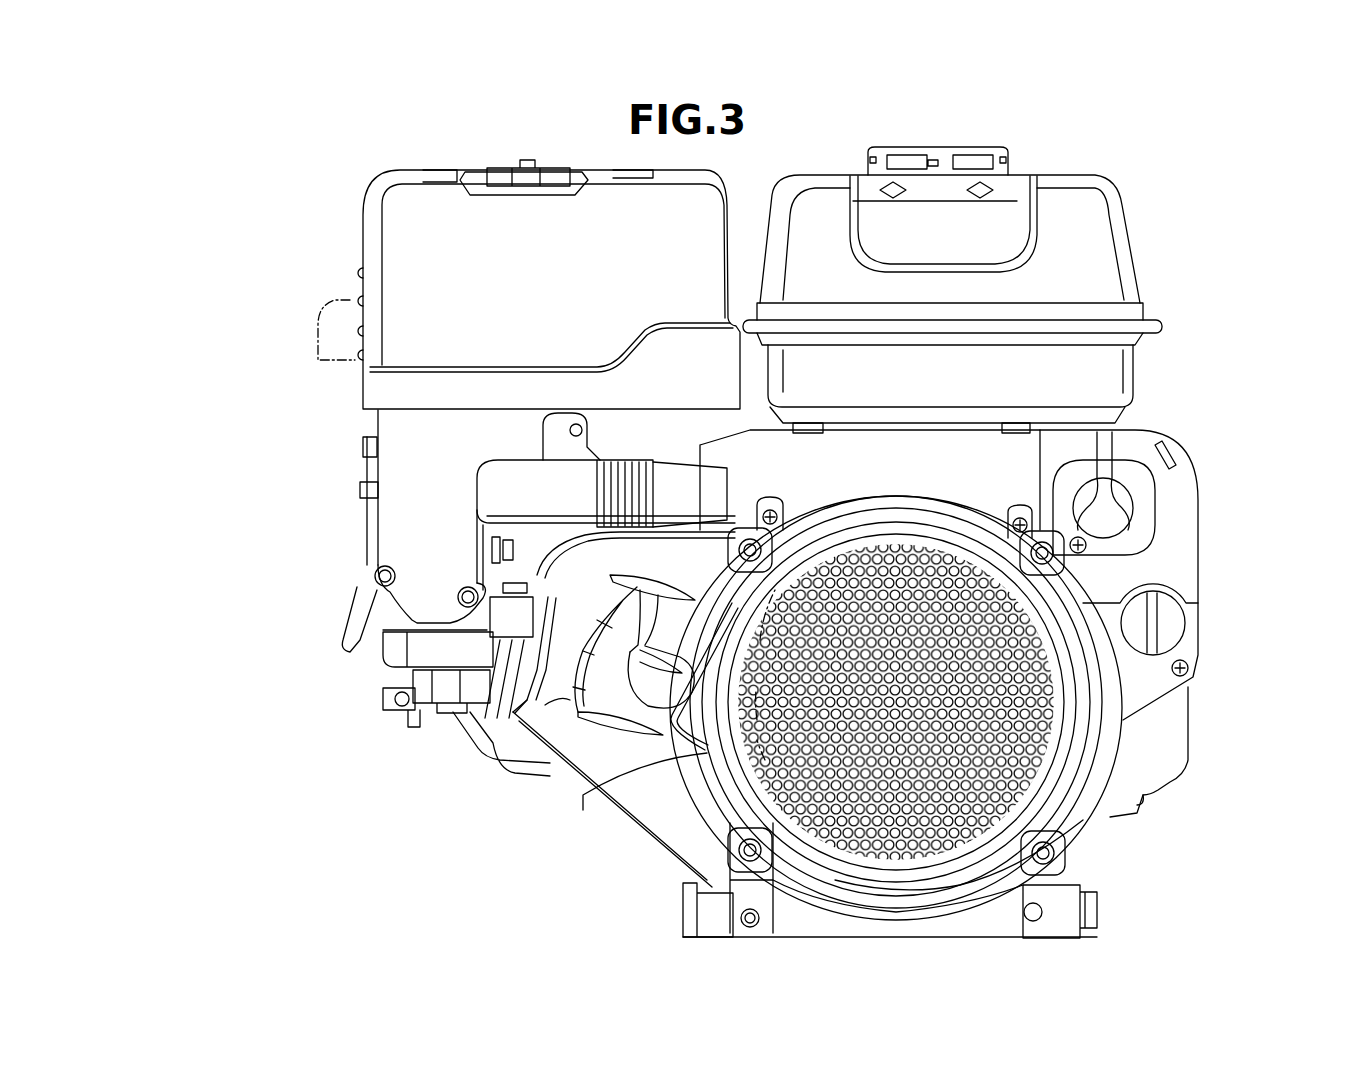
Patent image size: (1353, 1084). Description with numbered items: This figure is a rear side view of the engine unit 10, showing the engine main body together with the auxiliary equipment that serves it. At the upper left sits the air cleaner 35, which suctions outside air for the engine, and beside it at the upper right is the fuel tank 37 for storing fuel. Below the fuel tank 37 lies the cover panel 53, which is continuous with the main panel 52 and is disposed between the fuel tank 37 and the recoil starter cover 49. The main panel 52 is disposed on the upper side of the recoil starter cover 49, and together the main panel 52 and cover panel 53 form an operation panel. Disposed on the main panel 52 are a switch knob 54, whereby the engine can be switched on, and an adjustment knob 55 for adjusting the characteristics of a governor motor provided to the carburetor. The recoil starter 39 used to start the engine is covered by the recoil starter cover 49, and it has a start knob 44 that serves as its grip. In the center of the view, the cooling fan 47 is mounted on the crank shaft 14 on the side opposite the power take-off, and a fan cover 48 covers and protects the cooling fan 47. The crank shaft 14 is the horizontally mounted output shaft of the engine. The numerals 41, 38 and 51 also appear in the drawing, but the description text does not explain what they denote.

The engine unit 10 is at (183, 153).
The air cleaner 35 is at (385, 178).
The air cleaner housing 41 is at (363, 207).
The fuel tank 37 is at (1085, 178).
The cover panel 53 is at (990, 473).
The carburetor 38 is at (395, 545).
The recoil starter 39 is at (550, 700).
The start knob 44 is at (580, 713).
The recoil starter cover 49 is at (683, 760).
The fan cover 48 is at (663, 820).
The crank shaft 14 is at (940, 713).
The cooling fan 47 is at (813, 537).
The recoil starter 51 is at (1193, 428).
The main panel 52 is at (1147, 425).
The adjustment knob 55 is at (1080, 455).
The switch knob 54 is at (1167, 613).